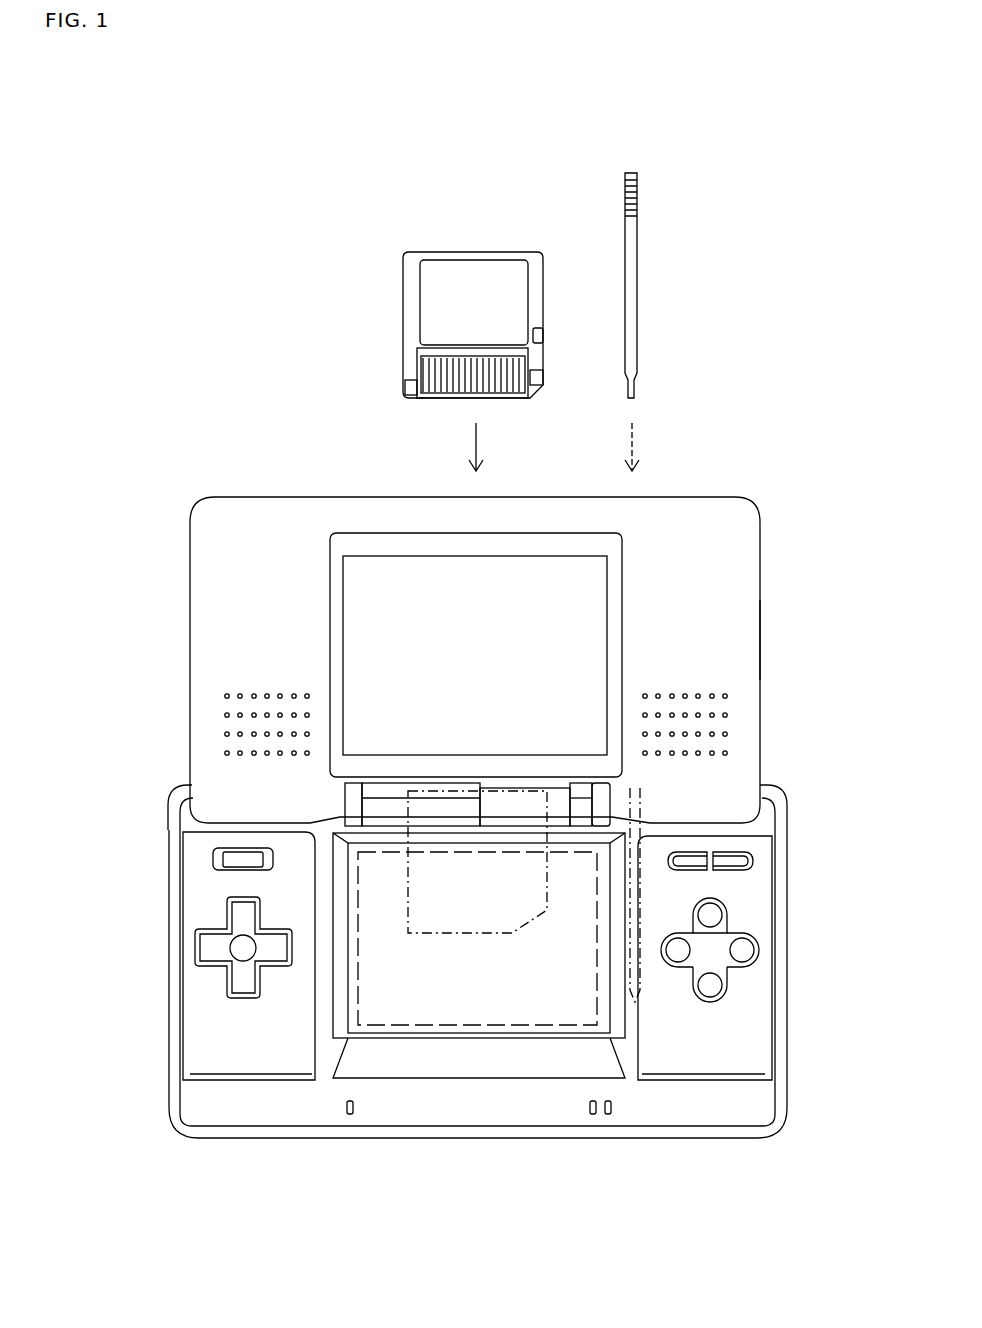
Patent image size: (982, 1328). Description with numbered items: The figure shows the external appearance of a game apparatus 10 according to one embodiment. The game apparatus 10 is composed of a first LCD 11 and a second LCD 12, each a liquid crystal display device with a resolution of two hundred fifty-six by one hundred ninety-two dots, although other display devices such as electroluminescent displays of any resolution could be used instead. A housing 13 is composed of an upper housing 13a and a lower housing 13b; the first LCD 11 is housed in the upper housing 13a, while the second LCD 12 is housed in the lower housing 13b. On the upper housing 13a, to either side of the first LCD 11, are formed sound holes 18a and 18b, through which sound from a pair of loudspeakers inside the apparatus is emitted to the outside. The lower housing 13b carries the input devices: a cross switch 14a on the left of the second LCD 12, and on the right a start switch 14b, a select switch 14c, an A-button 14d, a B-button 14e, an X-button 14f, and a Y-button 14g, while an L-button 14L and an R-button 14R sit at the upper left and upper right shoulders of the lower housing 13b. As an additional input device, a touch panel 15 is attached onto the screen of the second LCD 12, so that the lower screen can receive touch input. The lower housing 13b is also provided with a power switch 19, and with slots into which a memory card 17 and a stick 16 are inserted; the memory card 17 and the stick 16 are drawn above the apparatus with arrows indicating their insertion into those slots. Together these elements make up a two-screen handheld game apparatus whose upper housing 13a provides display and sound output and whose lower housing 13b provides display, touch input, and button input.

The game apparatus 10 is at (210, 307).
The first LCD 11 is at (363, 588).
The second LCD 12 is at (520, 1038).
The housing 13 is at (737, 497).
The upper housing 13a is at (730, 636).
The lower housing 13b is at (193, 1040).
The L-button 14L is at (170, 800).
The R-button 14R is at (775, 793).
The cross switch 14a is at (195, 940).
The start switch 14b is at (753, 870).
The select switch 14c is at (707, 852).
The A-button 14d is at (759, 950).
The B-button 14e is at (727, 985).
The X-button 14f is at (728, 915).
The Y-button 14g is at (678, 968).
The touch panel 15 is at (375, 1018).
The stick 16 is at (637, 222).
The memory card 17 is at (511, 250).
The sound hole 18a is at (228, 732).
The sound hole 18b is at (725, 697).
The power switch 19 is at (213, 858).